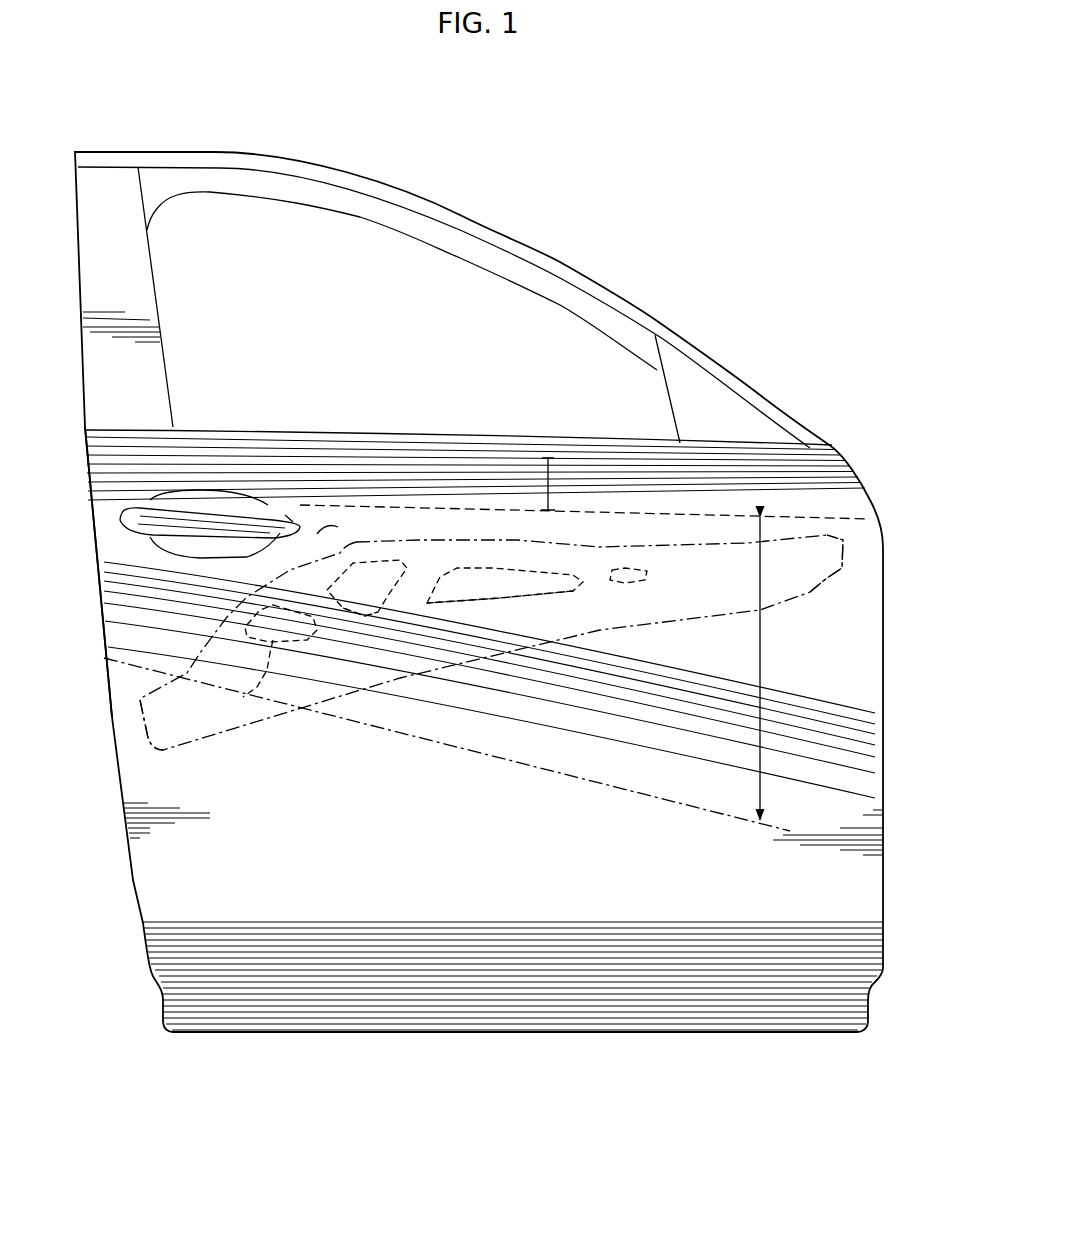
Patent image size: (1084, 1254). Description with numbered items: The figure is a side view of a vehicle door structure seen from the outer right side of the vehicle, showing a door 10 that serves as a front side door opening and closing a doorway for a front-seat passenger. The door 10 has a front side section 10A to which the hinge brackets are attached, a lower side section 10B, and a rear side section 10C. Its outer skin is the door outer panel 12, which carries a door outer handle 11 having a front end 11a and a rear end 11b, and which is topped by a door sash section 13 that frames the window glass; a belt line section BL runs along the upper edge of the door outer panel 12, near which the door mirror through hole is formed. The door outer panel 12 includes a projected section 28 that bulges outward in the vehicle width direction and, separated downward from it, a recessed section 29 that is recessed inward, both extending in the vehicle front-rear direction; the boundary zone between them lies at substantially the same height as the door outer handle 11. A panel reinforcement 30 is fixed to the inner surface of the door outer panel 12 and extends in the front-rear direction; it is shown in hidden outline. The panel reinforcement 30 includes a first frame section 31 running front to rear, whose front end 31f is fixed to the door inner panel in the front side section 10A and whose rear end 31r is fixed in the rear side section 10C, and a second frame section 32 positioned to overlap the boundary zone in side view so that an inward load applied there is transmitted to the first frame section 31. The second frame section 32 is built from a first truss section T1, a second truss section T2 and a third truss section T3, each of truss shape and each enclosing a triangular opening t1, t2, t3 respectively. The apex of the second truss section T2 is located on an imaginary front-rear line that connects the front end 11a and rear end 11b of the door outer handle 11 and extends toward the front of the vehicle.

The door 10 is at (894, 650).
The front side section 10A is at (884, 765).
The lower side section 10B is at (510, 1033).
The rear side section 10C is at (100, 620).
The door outer handle 11 is at (192, 503).
The front end of door outer handle 11a is at (294, 520).
The rear end of door outer handle 11b is at (123, 527).
The door outer panel 12 is at (481, 818).
The door sash section 13 is at (510, 228).
The projected section 28 is at (553, 455).
The recessed section 29 is at (640, 795).
The panel reinforcement 30 is at (479, 531).
The first frame section 31 is at (282, 717).
The front end of first frame section 31f is at (887, 547).
The rear end of first frame section 31r is at (150, 740).
The second frame section 32 is at (519, 538).
The belt line section BL is at (440, 431).
The first truss section T1 is at (465, 565).
The second truss section T2 is at (354, 611).
The third truss section T3 is at (262, 617).
The triangular opening t1 is at (502, 592).
The triangular opening t2 is at (382, 598).
The triangular opening t3 is at (252, 690).